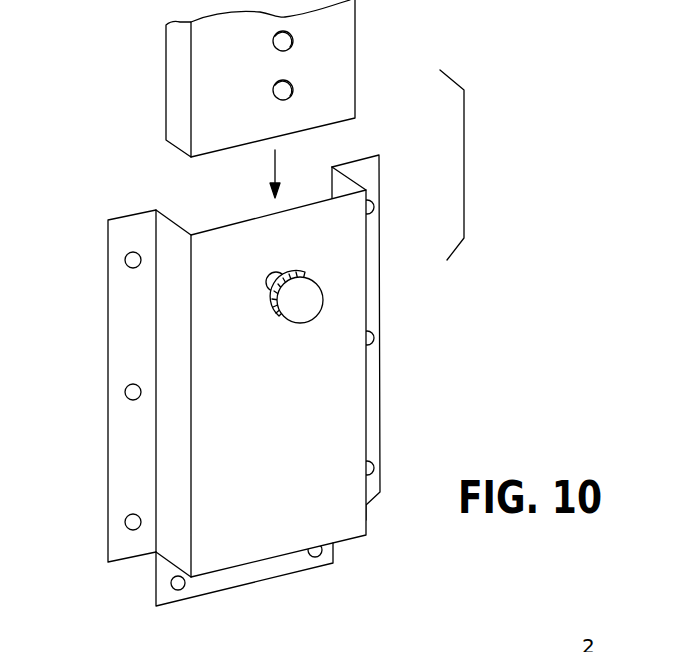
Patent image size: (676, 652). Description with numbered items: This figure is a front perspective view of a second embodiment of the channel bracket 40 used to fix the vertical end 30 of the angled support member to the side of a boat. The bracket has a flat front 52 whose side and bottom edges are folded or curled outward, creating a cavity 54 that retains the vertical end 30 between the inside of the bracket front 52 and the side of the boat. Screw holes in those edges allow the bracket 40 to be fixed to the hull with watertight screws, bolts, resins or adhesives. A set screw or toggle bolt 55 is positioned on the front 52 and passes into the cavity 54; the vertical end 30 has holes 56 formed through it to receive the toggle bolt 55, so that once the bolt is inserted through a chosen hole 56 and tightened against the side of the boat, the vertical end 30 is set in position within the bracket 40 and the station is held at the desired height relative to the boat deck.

The vertical end 30 is at (241, 78).
The channel bracket 40 is at (241, 403).
The flat front 52 is at (345, 423).
The cavity 54 is at (212, 232).
The toggle bolt 55 is at (322, 299).
The holes 56 is at (273, 43).